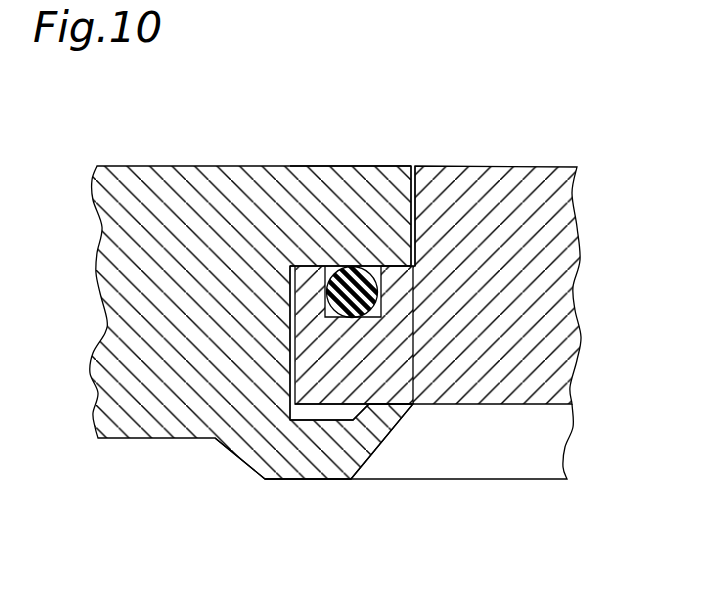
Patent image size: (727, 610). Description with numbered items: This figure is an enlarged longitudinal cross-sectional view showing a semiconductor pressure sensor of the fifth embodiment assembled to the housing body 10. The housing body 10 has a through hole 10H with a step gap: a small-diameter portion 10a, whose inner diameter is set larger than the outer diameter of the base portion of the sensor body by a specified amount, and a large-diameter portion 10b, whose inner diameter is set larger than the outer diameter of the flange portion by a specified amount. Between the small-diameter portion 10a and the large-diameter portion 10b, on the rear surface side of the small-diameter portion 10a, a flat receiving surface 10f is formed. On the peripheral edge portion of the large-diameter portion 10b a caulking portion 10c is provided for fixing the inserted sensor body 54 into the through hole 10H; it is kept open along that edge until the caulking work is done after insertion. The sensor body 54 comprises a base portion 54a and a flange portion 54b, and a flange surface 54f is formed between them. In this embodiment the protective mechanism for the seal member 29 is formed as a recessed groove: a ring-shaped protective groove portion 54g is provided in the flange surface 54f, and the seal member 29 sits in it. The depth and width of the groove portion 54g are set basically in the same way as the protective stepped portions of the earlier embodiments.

The housing body 10 is at (175, 437).
The small-diameter portion 10a is at (412, 226).
The large-diameter portion 10b is at (291, 331).
The caulking portion 10c is at (365, 460).
The flat receiving surface 10f is at (300, 263).
The through hole 10H is at (415, 240).
The seal member 29 is at (340, 267).
The sensor body 54 is at (463, 167).
The base portion 54a is at (412, 240).
The flange portion 54b is at (296, 340).
The flange surface 54f is at (388, 266).
The protective groove portion 54g is at (368, 318).